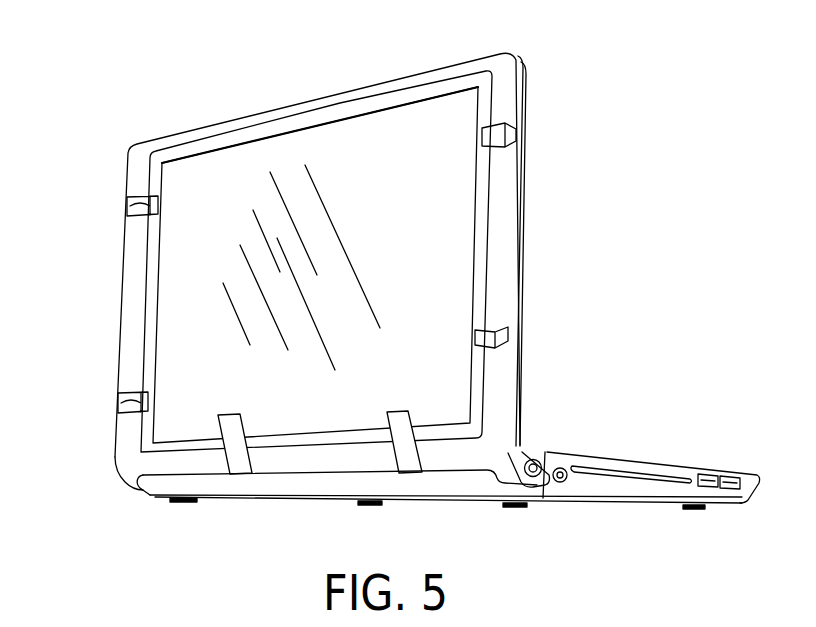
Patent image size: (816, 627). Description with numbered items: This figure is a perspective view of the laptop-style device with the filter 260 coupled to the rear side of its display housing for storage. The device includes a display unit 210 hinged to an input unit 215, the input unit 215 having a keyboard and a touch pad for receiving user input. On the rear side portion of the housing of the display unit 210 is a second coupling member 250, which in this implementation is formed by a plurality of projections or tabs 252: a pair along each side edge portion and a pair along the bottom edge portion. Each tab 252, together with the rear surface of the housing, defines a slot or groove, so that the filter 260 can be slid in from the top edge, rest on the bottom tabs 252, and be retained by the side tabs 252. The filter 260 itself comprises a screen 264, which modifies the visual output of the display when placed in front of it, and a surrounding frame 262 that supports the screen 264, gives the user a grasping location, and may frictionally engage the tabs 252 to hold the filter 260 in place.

The display unit 210 is at (212, 128).
The input unit 215 is at (687, 462).
The second coupling member 250 is at (108, 265).
The projections or tabs 252 is at (500, 138).
The filter 260 is at (442, 209).
The frame 262 is at (418, 92).
The screen 264 is at (443, 257).